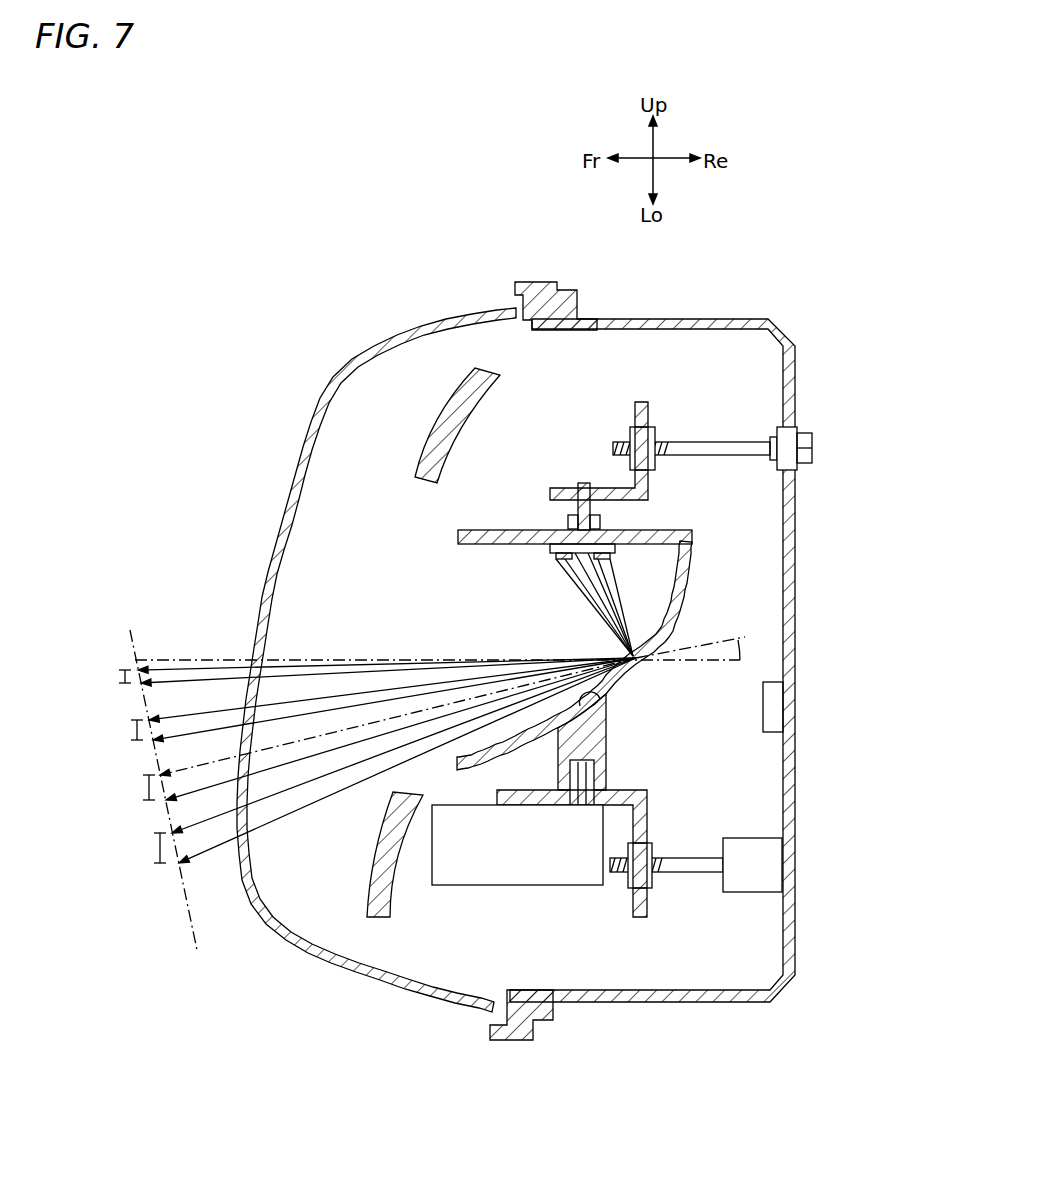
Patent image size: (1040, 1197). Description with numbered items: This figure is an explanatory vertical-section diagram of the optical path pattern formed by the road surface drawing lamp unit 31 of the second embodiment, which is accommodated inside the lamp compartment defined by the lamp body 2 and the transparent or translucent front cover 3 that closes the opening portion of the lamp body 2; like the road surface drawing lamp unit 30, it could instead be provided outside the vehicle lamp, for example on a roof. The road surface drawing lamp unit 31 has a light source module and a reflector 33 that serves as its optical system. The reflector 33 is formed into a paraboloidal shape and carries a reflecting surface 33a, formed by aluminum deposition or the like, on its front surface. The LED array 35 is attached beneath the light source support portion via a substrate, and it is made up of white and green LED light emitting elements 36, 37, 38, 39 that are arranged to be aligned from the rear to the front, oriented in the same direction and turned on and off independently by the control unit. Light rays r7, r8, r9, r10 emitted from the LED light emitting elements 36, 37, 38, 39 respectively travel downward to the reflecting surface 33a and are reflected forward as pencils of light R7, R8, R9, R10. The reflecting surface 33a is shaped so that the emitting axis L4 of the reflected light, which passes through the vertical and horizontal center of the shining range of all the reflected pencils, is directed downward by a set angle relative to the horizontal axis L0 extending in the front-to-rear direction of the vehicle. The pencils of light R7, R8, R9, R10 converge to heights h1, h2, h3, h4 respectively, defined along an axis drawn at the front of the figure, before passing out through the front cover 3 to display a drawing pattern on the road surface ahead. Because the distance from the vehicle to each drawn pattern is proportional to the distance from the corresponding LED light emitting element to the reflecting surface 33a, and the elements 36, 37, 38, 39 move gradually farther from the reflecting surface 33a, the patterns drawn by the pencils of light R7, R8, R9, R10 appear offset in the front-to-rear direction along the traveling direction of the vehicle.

The lamp body 2 is at (753, 322).
The front cover 3 is at (403, 333).
The road surface drawing lamp unit 30 is at (327, 216).
The road surface drawing lamp unit 31 is at (440, 523).
The reflector 33 is at (693, 558).
The reflecting surface 33a is at (624, 703).
The LED array 35 is at (540, 548).
The LED light emitting element 36 is at (612, 542).
The LED light emitting element 37 is at (600, 537).
The LED light emitting element 38 is at (566, 543).
The LED light emitting element 39 is at (556, 545).
The light ray r7 is at (227, 841).
The light ray r8 is at (270, 796).
The light ray r9 is at (293, 702).
The light ray r10 is at (190, 666).
The pencil of light R7 is at (195, 855).
The pencil of light R8 is at (188, 810).
The pencil of light R9 is at (178, 727).
The pencil of light R10 is at (163, 667).
The height h1 is at (148, 852).
The height h2 is at (136, 791).
The height h3 is at (125, 734).
The height h4 is at (113, 682).
The horizontal axis L0 is at (728, 661).
The emitting axis L4 is at (156, 768).